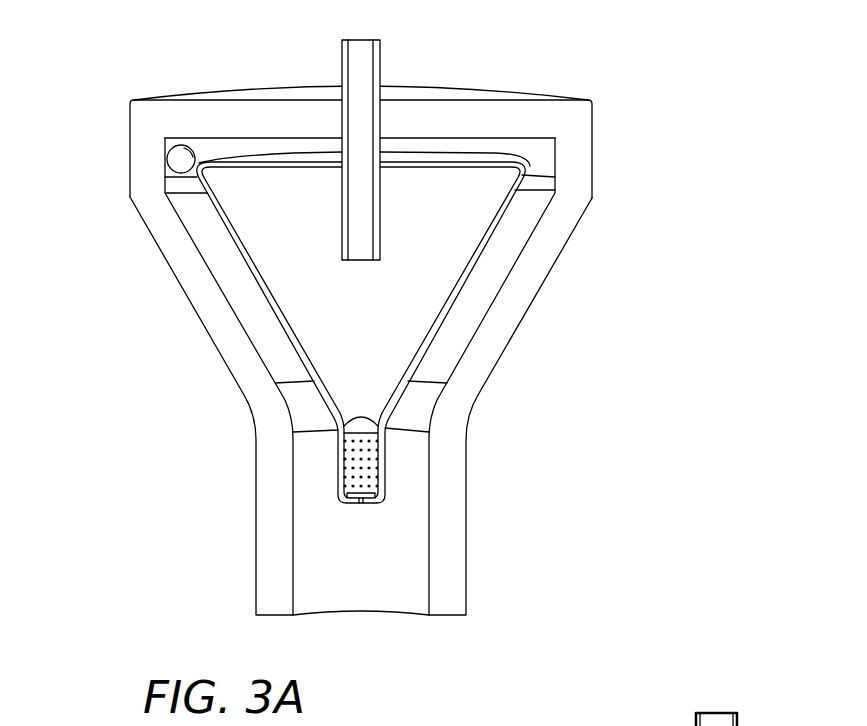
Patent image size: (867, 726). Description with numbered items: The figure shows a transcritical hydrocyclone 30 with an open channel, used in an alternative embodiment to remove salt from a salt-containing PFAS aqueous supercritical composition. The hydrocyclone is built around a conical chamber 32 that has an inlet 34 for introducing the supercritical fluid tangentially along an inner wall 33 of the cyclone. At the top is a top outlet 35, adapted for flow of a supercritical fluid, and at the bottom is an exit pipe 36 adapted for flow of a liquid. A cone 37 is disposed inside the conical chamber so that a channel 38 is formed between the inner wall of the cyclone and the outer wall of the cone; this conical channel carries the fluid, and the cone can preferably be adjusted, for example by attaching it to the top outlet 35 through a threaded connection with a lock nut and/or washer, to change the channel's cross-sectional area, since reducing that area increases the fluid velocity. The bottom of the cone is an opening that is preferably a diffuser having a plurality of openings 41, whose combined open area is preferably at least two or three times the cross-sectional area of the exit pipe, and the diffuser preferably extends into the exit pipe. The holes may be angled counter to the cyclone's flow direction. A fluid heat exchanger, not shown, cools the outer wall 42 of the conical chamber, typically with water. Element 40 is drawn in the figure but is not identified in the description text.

The transcritical hydrocyclone 30 is at (608, 143).
The conical chamber 32 is at (525, 342).
The inner wall 33 is at (212, 268).
The inlet 34 is at (175, 158).
The top outlet 35 is at (363, 55).
The exit pipe 36 is at (455, 580).
The cone 37 is at (480, 258).
The channel 38 is at (262, 325).
The strainer basket 40 is at (383, 455).
The openings 41 is at (340, 476).
The outer wall 42 is at (172, 230).